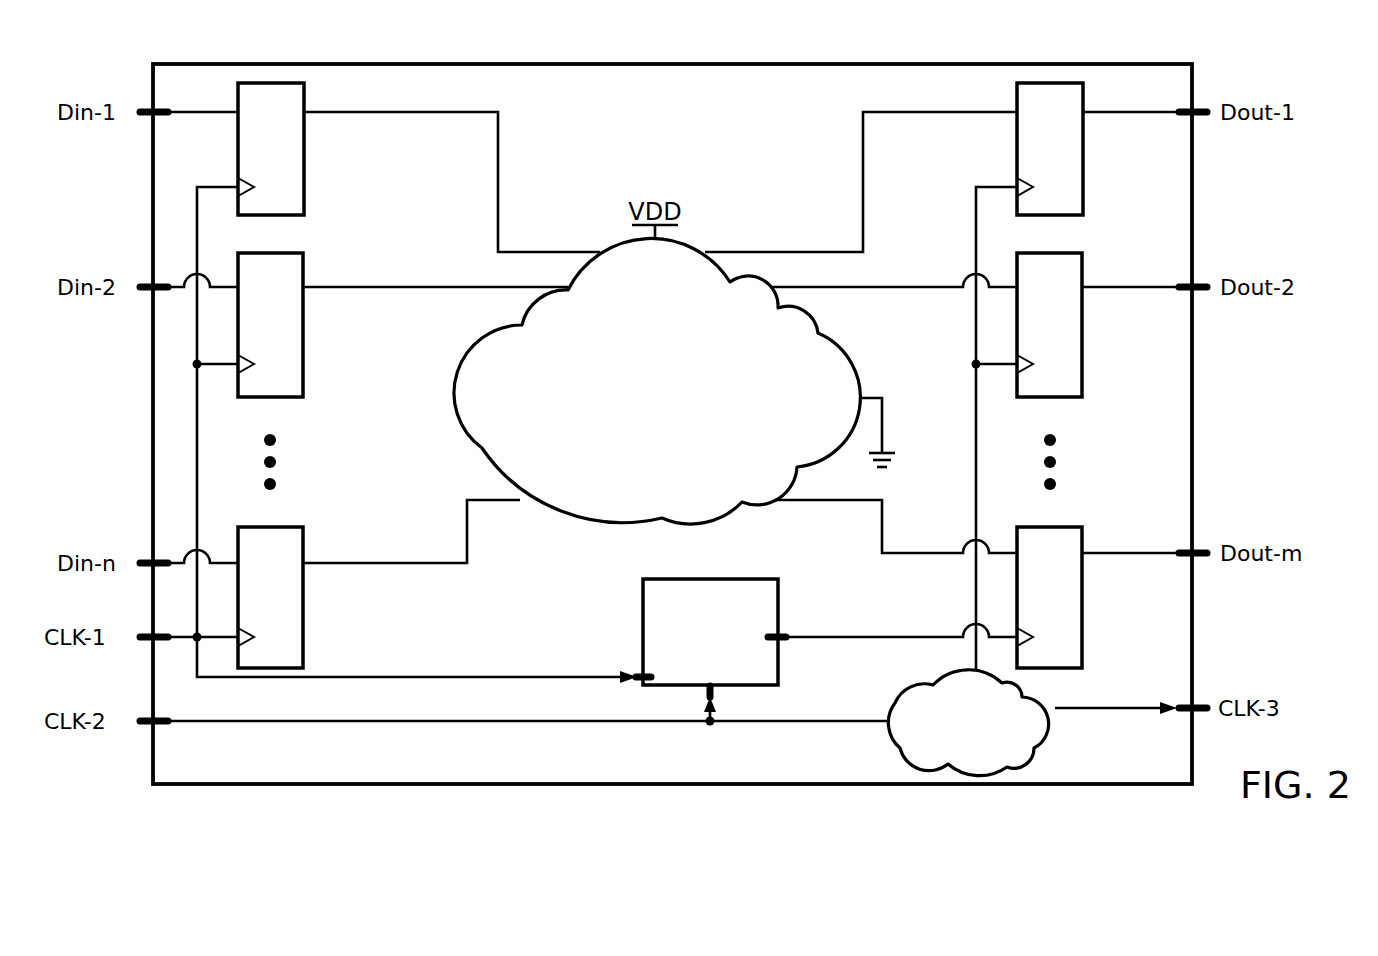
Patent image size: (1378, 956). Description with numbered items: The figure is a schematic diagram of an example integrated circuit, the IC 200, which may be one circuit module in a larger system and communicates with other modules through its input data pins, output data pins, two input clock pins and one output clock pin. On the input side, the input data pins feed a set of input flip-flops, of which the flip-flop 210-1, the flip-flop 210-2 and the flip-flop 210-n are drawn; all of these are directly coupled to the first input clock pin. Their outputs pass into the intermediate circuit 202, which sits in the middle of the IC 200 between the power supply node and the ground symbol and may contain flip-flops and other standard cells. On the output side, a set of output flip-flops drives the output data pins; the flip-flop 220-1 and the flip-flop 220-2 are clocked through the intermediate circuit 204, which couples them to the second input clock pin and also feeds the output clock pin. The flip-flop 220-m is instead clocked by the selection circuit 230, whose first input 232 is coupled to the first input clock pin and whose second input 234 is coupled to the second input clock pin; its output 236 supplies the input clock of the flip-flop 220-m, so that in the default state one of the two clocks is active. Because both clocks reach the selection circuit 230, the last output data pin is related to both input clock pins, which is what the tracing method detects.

The IC 200 is at (1193, 438).
The intermediate circuit 202 is at (631, 443).
The intermediate circuit 204 is at (1052, 749).
The flip-flop 210-1 is at (305, 186).
The flip-flop 210-2 is at (304, 363).
The flip-flop 210-n is at (304, 643).
The flip-flop 220-1 is at (1084, 181).
The flip-flop 220-2 is at (1083, 358).
The flip-flop 220-m is at (1083, 645).
The selection circuit 230 is at (712, 578).
The input of the selection circuit 232 is at (626, 663).
The input of the selection circuit 234 is at (730, 701).
The output of the selection circuit 236 is at (797, 620).